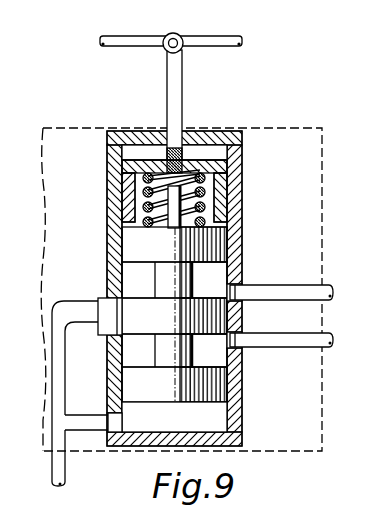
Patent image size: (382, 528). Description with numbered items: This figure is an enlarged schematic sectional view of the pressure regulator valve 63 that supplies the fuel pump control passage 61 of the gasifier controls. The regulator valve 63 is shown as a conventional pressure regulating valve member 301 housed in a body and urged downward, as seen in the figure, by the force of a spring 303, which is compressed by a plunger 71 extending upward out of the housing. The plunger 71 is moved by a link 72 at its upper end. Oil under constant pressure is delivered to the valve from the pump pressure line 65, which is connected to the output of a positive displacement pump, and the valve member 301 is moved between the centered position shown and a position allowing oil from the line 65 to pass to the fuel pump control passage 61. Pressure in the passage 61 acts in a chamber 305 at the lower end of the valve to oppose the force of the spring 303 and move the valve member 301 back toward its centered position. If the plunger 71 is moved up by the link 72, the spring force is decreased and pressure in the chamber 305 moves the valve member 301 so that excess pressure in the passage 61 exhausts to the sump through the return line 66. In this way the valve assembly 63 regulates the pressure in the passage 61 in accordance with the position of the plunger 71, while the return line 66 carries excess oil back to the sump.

The fuel pump control passage 61 is at (62, 462).
The pressure regulator valve 63 is at (266, 128).
The pump pressure line 65 is at (262, 286).
The return line 66 is at (277, 341).
The plunger 71 is at (168, 88).
The link 72 is at (220, 42).
The pressure regulating valve member 301 is at (217, 240).
The spring 303 is at (204, 192).
The chamber 305 is at (215, 418).